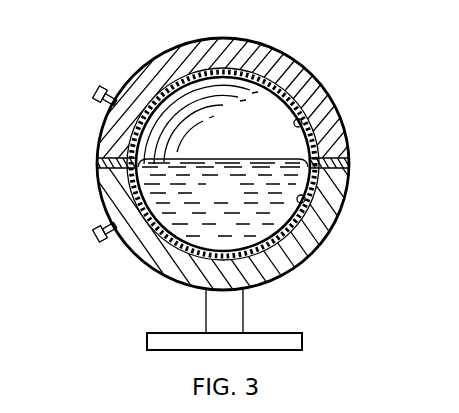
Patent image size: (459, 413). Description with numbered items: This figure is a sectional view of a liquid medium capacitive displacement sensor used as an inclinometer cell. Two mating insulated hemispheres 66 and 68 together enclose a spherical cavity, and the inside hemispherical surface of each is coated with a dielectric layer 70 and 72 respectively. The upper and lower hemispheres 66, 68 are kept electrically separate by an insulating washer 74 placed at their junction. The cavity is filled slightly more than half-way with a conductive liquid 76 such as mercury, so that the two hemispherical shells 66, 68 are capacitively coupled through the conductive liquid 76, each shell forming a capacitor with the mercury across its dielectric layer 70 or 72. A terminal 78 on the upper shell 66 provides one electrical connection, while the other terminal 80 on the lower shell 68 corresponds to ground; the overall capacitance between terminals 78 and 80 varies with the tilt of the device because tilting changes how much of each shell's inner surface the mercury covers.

The upper insulated hemisphere 66 is at (277, 58).
The lower insulated hemisphere 68 is at (308, 240).
The dielectric layer 70 is at (303, 124).
The dielectric layer 72 is at (306, 200).
The insulating washer 74 is at (346, 164).
The conductive liquid 76 is at (236, 198).
The terminal 78 is at (92, 90).
The terminal 80 is at (95, 237).